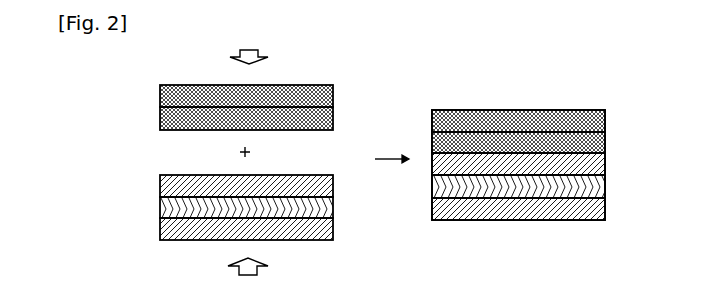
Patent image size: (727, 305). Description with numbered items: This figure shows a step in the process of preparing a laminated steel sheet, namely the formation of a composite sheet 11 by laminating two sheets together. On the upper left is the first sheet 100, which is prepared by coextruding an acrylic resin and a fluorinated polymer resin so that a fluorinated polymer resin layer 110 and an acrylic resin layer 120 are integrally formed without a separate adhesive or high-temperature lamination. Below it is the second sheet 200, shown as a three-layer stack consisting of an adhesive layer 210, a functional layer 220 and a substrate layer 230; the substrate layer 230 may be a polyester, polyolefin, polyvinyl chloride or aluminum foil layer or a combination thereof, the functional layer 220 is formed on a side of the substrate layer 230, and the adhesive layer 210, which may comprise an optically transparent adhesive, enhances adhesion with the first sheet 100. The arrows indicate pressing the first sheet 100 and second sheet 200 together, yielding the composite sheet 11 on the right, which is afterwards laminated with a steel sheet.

The composite sheet 11 is at (518, 153).
The first sheet 100 is at (384, 119).
The fluorinated polymer resin layer 110 is at (160, 96).
The acrylic resin layer 120 is at (160, 118).
The second sheet 200 is at (384, 196).
The adhesive layer 210 is at (160, 186).
The functional layer 220 is at (160, 207).
The substrate layer 230 is at (160, 229).